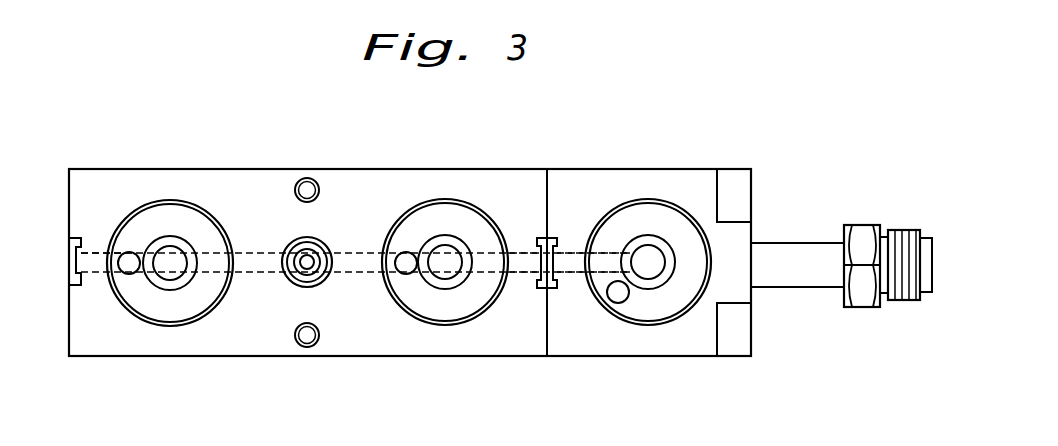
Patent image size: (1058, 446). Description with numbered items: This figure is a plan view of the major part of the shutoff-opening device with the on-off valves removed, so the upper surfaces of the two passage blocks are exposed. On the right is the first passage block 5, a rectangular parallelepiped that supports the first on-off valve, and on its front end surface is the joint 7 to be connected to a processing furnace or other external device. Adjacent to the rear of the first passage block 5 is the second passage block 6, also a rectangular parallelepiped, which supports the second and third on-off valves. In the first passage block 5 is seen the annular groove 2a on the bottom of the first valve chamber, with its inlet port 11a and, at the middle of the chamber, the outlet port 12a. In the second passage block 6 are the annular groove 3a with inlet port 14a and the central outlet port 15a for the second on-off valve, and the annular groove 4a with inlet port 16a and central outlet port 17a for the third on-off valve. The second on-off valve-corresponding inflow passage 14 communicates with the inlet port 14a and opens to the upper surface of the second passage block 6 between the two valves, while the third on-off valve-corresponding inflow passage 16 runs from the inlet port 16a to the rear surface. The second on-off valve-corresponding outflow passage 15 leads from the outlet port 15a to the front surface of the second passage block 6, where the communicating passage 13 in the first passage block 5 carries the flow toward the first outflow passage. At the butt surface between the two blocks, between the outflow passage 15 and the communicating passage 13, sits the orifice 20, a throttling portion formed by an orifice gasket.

The annular groove 2a is at (653, 218).
The annular groove 3a is at (430, 223).
The annular groove 4a is at (168, 215).
The first passage block 5 is at (652, 357).
The second passage block 6 is at (365, 357).
The joint 7 is at (866, 225).
The inlet port 11a is at (618, 292).
The outlet port 12a is at (652, 270).
The communicating passage 13 is at (577, 250).
The second on-off valve-corresponding inflow passage 14 is at (358, 252).
The inlet port 14a is at (406, 268).
The second on-off valve-corresponding outflow passage 15 is at (523, 262).
The outlet port 15a is at (449, 268).
The third on-off valve-corresponding inflow passage 16 is at (93, 252).
The inlet port 16a is at (128, 266).
The outlet port 17a is at (170, 267).
The orifice 20 is at (541, 238).